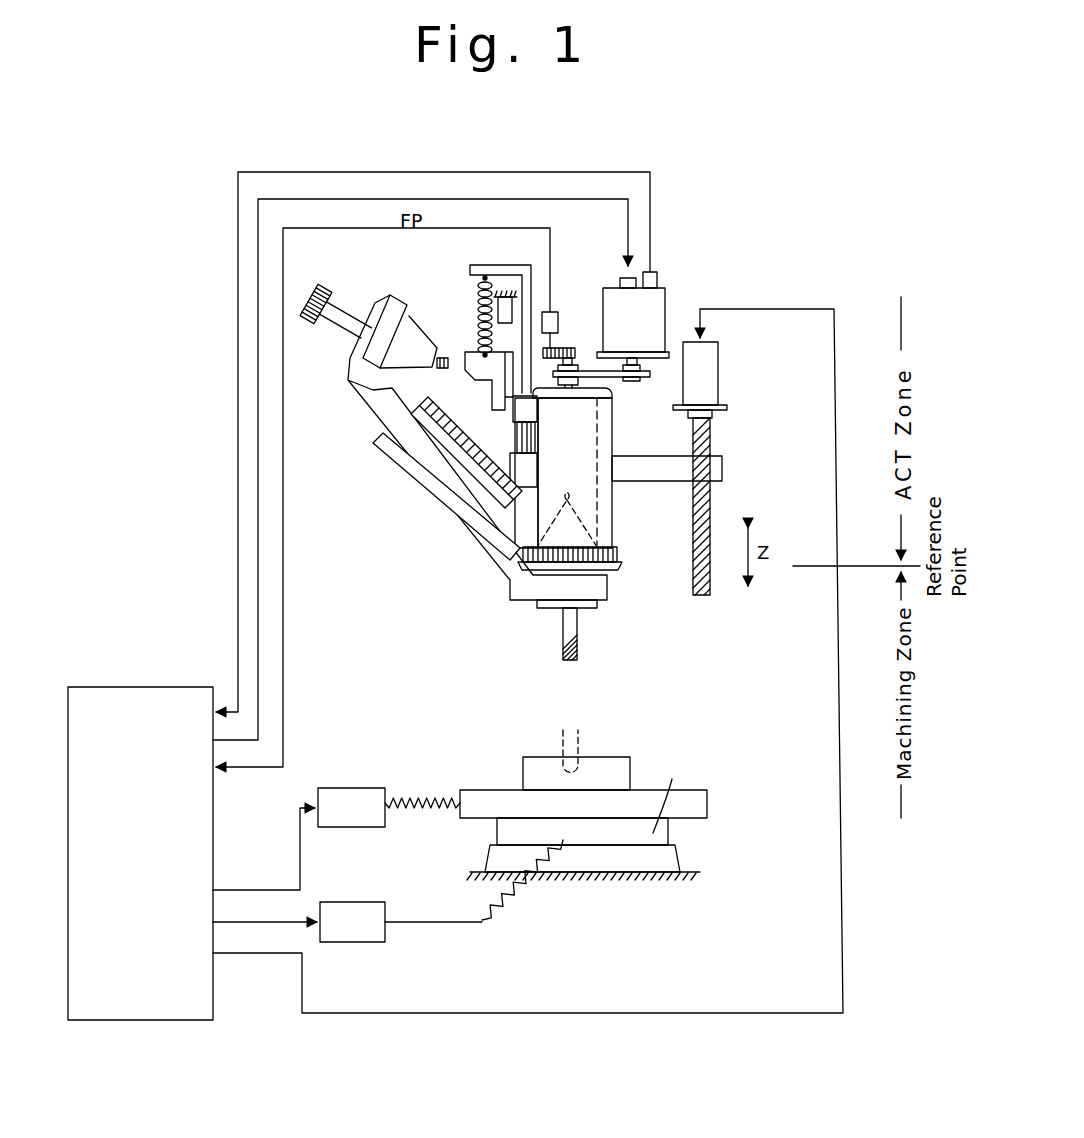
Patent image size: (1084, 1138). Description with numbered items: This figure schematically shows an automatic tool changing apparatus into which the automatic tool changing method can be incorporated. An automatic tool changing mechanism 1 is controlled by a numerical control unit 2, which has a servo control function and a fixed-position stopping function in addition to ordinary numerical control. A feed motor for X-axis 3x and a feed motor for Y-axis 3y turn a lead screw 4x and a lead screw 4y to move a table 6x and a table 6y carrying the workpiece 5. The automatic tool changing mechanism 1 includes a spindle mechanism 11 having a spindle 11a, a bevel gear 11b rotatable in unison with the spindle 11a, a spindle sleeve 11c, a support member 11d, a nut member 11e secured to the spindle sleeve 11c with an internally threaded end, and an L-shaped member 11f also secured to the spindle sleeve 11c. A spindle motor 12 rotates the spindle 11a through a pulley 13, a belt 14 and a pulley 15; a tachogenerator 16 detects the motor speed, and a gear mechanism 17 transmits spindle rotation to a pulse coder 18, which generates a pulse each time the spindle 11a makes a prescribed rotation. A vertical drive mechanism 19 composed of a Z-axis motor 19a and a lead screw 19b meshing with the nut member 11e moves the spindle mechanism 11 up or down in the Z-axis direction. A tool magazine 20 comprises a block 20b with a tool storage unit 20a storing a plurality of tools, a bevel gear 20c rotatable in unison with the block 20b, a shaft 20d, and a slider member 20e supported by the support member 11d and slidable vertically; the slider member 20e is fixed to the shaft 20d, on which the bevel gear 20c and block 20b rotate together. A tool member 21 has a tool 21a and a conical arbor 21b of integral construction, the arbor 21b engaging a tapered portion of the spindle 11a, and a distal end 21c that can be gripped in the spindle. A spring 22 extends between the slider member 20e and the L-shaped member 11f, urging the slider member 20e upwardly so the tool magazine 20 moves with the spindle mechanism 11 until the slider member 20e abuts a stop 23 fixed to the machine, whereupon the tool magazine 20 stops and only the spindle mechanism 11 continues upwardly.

The automatic tool changing mechanism 1 is at (738, 247).
The numerical control unit 2 is at (153, 1010).
The feed motor for X-axis 3x is at (358, 797).
The feed motor for Y-axis 3y is at (358, 906).
The lead screw 4x is at (433, 797).
The lead screw 4y is at (507, 888).
The workpiece 5 is at (612, 758).
The table 6x is at (707, 806).
The table 6y is at (668, 838).
The spindle mechanism 11 is at (615, 436).
The spindle 11a is at (600, 457).
The bevel gear 11b is at (610, 568).
The spindle sleeve 11c is at (612, 507).
The support member 11d is at (597, 525).
The nut member 11e is at (540, 398).
The L-shaped member 11f is at (516, 266).
The spindle motor 12 is at (665, 322).
The pulley 13 is at (640, 374).
The belt 14 is at (610, 380).
The pulley 15 is at (578, 356).
The tachogenerator 16 is at (657, 278).
The gear mechanism 17 is at (557, 316).
The pulse coder 18 is at (556, 270).
The vertical drive mechanism 19 is at (732, 456).
The Z-axis motor 19a is at (714, 375).
The lead screw 19b is at (704, 527).
The tool magazine 20 is at (452, 478).
The tool storage unit 20a is at (349, 366).
The block 20b is at (378, 443).
The bevel gear 20c is at (468, 514).
The shaft 20d is at (492, 428).
The slider member 20e is at (476, 354).
The tool member 21 is at (457, 468).
The tool 21a is at (330, 318).
The conical arbor 21b is at (423, 320).
The distal end 21c is at (431, 461).
The spring 22 is at (478, 307).
The stop 23 is at (502, 275).